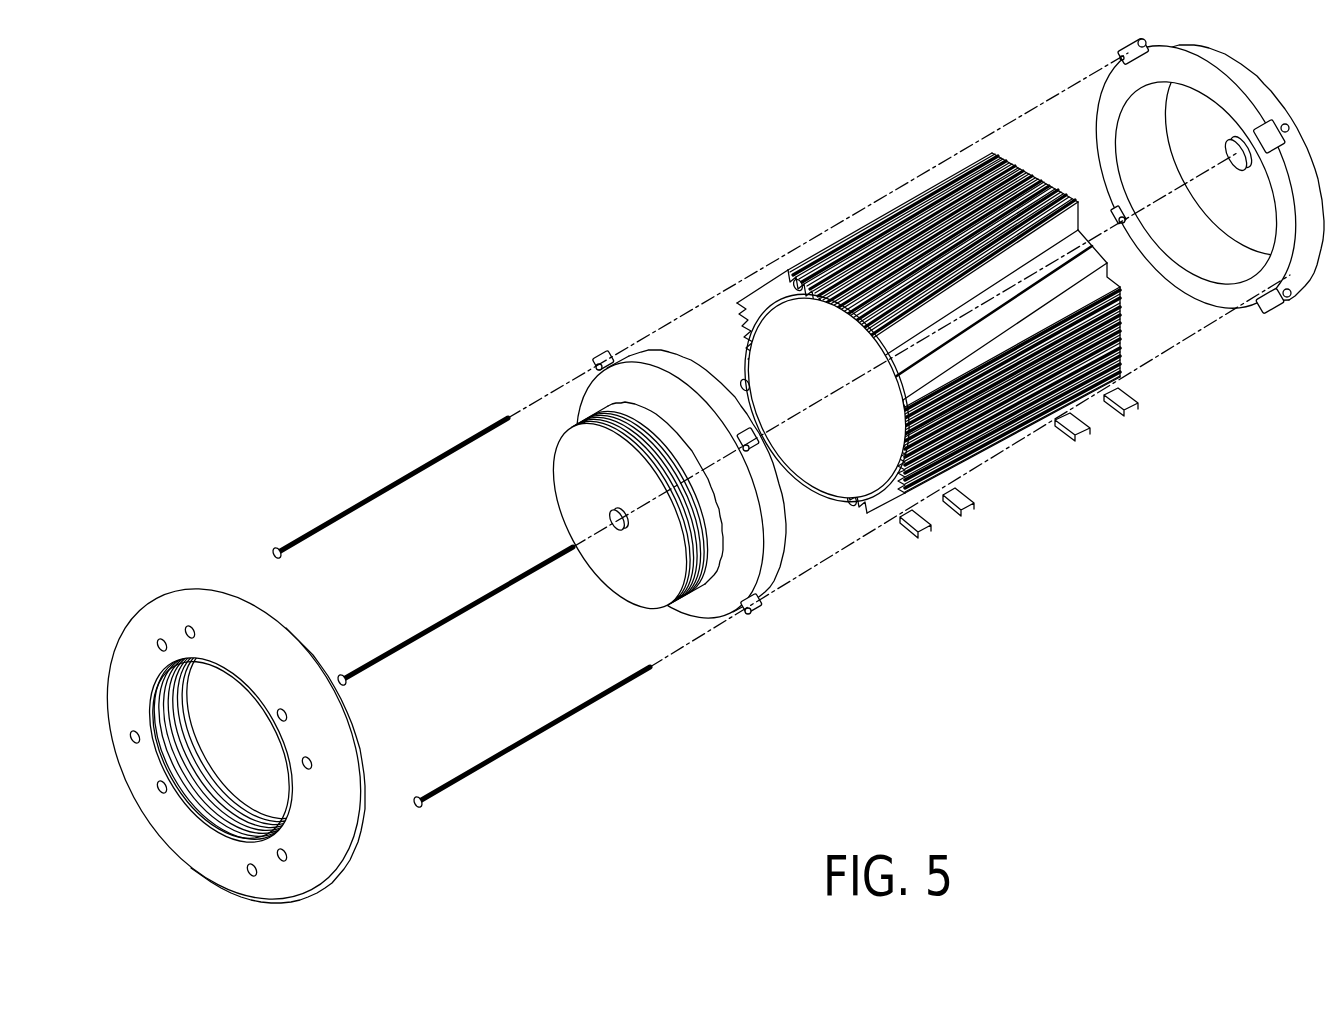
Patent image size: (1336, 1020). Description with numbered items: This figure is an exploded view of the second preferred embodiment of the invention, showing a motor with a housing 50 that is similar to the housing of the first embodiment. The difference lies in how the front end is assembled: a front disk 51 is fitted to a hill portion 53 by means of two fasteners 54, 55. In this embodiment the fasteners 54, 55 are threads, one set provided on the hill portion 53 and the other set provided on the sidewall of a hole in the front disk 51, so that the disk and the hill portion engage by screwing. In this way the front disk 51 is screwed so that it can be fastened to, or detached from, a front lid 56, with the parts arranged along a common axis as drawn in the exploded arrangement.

The housing 50 is at (912, 620).
The front disk 51 is at (191, 582).
The hill portion 53 is at (575, 490).
The fastener 54 is at (182, 770).
The fastener 55 is at (690, 592).
The front lid 56 is at (692, 364).